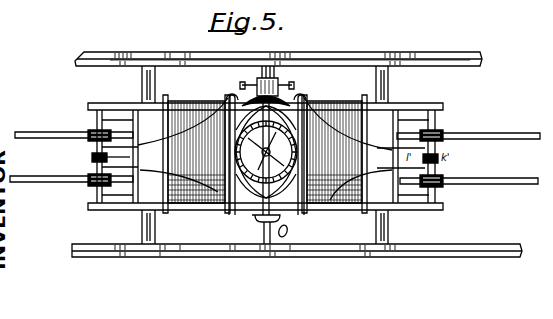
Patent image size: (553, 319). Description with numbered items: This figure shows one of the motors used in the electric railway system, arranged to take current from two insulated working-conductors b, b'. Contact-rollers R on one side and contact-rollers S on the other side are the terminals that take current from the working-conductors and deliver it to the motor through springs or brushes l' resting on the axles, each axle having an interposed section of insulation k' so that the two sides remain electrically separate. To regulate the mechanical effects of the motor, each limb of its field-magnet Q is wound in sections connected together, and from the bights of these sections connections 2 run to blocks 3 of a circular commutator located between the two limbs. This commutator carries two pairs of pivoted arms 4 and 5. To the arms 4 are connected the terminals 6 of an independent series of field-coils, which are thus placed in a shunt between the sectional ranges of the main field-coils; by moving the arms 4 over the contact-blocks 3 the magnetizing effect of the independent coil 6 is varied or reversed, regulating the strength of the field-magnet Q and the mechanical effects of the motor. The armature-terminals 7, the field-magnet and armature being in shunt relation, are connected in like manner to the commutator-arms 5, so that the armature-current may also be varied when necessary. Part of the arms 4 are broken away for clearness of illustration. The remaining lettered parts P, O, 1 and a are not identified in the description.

The rail a is at (299, 147).
The insulated working-conductor b is at (468, 130).
The insulated working-conductor b' is at (469, 175).
The contact-roller R is at (74, 125).
The contact-roller S is at (71, 187).
The interposed section of insulation k' is at (91, 156).
The rod l' is at (118, 155).
The field-magnet Q is at (265, 148).
The pump P is at (271, 86).
The outlet O is at (270, 229).
The commutator disc 1 is at (266, 155).
The connection 2 is at (265, 152).
The block 3 is at (266, 151).
The pivoted arm 4 is at (287, 150).
The pivoted arm 5 is at (272, 135).
The terminal of independent field-coils 6 is at (267, 91).
The armature-terminal 7 is at (266, 153).